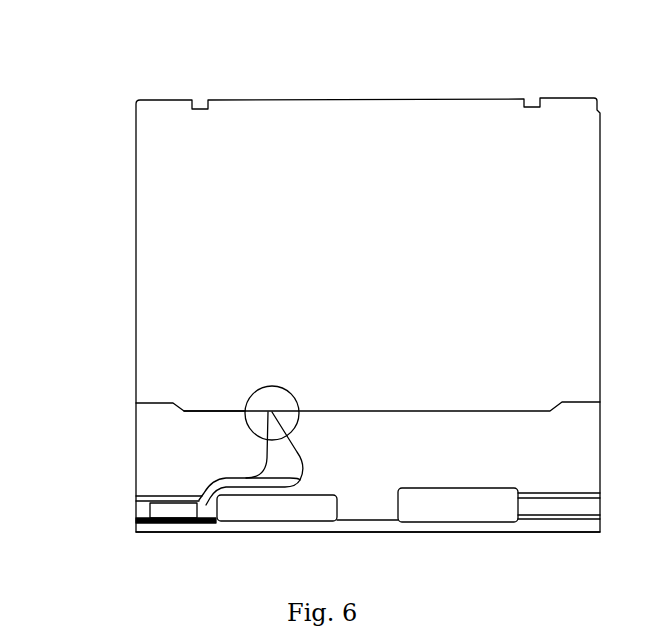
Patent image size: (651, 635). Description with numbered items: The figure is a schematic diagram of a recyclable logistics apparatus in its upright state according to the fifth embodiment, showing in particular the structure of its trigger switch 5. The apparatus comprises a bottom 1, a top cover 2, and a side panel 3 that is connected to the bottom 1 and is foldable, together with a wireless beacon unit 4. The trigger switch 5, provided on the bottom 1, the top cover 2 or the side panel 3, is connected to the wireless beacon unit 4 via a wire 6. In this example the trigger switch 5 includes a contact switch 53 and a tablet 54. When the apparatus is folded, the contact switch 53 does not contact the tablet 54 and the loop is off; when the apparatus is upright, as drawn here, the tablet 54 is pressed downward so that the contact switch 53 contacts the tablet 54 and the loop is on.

The bottom 1 is at (222, 457).
The top cover 2 is at (158, 101).
The side panel 3 is at (157, 205).
The wireless beacon unit 4 is at (152, 521).
The trigger switch 5 is at (268, 410).
The wire 6 is at (295, 455).
The contact switch 53 is at (250, 412).
The tablet 54 is at (272, 412).